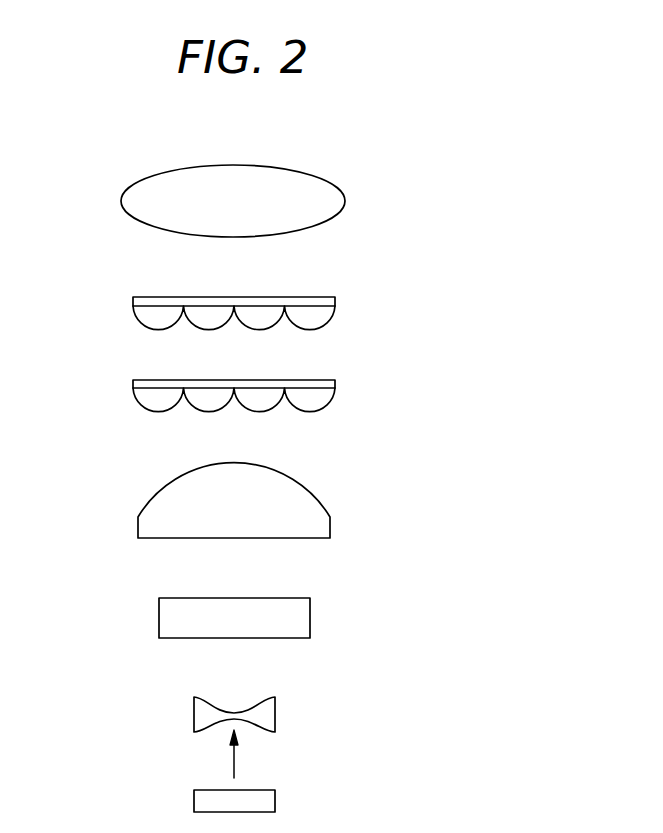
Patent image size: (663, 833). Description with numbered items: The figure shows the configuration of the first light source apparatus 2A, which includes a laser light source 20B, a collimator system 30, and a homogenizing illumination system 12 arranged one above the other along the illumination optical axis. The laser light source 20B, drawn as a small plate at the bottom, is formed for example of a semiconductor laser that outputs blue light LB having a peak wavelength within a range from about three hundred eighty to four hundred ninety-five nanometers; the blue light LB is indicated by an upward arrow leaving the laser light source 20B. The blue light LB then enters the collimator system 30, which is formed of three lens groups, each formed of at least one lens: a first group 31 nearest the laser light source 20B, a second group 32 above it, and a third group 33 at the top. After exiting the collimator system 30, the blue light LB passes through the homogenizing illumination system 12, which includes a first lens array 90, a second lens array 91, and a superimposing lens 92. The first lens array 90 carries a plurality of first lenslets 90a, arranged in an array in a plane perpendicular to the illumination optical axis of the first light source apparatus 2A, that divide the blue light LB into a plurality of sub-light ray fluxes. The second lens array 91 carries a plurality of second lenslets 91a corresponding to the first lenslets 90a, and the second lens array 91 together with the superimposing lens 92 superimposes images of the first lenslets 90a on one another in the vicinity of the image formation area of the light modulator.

The first light source apparatus 2A is at (487, 172).
The homogenizing illumination system 12 is at (423, 188).
The superimposing lens 92 is at (329, 206).
The second lens array 91 is at (335, 303).
The second lenslets 91a is at (153, 314).
The first lens array 90 is at (335, 385).
The first lenslets 90a is at (153, 396).
The collimator system 30 is at (423, 485).
The third group 33 is at (333, 502).
The second group 32 is at (333, 608).
The first group 31 is at (285, 712).
The blue light LB is at (234, 768).
The laser light source 20B is at (285, 800).